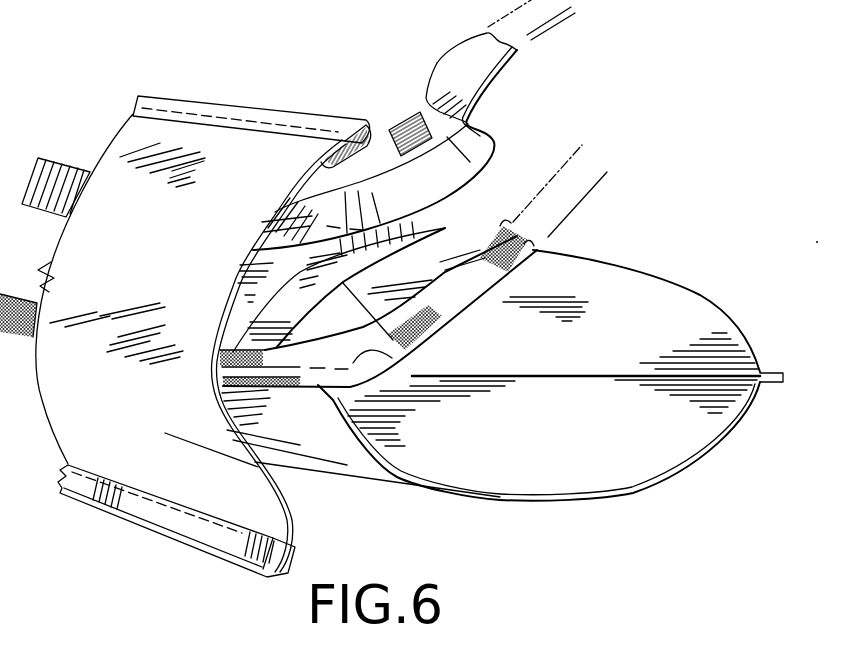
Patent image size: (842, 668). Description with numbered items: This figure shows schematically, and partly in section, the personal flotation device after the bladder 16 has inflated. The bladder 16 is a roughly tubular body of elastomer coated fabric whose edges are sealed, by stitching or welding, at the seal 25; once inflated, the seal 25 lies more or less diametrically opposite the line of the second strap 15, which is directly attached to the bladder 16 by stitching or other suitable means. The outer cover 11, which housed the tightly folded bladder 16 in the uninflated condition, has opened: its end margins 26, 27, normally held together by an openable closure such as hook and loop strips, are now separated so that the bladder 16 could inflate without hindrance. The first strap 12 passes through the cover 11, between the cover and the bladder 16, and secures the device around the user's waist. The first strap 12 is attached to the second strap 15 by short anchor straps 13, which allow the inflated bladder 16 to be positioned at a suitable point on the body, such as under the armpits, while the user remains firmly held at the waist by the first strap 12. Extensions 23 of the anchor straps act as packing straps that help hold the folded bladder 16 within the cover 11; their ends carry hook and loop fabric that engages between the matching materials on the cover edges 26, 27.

The outer cover 11 is at (134, 431).
The first belt 12 is at (461, 73).
The anchor straps 13 is at (408, 350).
The second belt 15 is at (300, 373).
The bladder 16 is at (664, 288).
The extensions 23 is at (397, 118).
The seal 25 is at (773, 372).
The end margin of the cover 26 is at (283, 118).
The end margin of the cover 27 is at (175, 520).